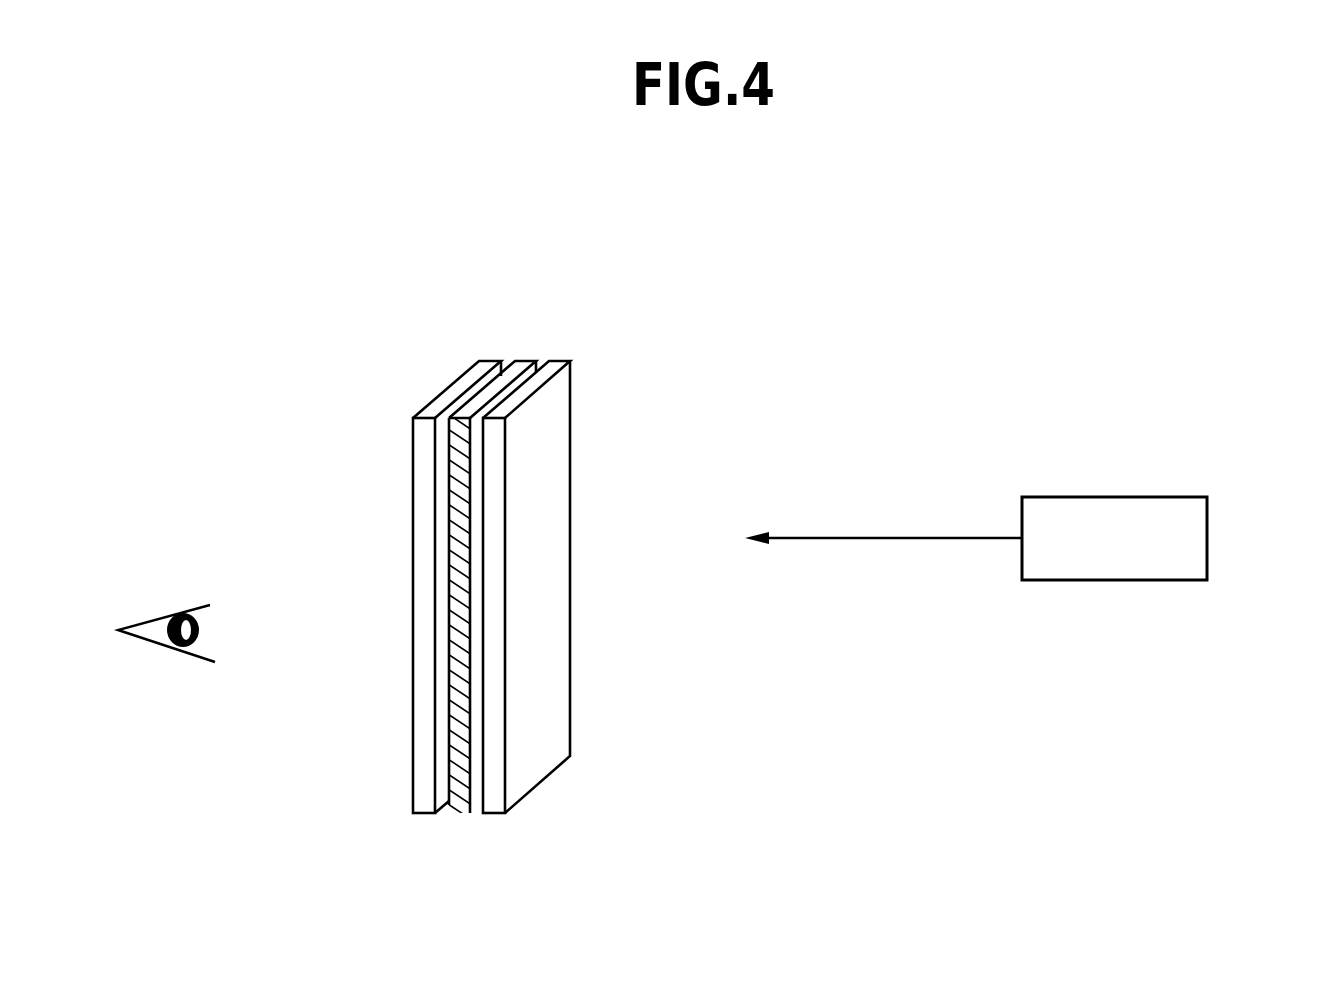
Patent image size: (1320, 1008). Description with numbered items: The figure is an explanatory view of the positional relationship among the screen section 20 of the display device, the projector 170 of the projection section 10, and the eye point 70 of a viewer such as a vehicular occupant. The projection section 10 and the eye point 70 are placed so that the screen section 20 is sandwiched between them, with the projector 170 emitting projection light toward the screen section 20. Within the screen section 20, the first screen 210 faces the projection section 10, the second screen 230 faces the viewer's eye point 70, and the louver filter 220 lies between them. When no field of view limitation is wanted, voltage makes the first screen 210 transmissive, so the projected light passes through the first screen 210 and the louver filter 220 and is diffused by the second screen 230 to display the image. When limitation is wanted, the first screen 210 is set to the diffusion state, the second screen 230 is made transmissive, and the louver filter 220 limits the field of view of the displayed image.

The screen section 20 is at (614, 300).
The projection section 10 is at (1150, 436).
The projector 170 is at (1207, 535).
The eye point 70 is at (177, 613).
The first screen 210 is at (495, 815).
The louver filter 220 is at (462, 815).
The second screen 230 is at (427, 813).